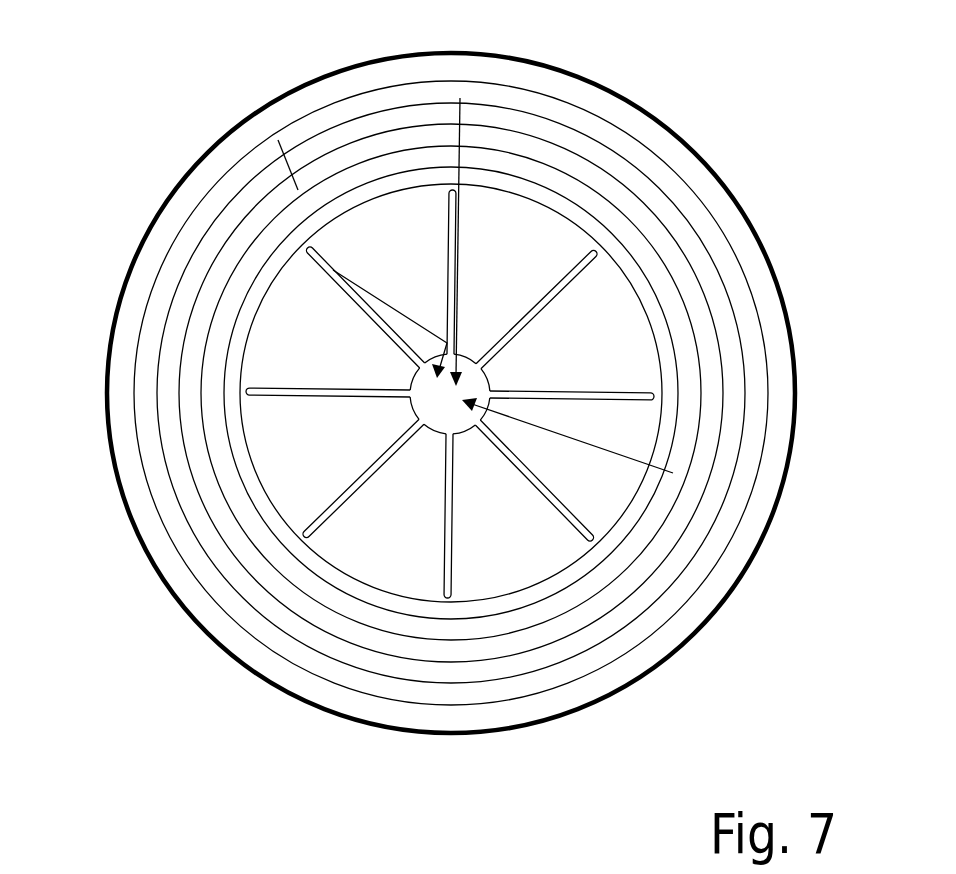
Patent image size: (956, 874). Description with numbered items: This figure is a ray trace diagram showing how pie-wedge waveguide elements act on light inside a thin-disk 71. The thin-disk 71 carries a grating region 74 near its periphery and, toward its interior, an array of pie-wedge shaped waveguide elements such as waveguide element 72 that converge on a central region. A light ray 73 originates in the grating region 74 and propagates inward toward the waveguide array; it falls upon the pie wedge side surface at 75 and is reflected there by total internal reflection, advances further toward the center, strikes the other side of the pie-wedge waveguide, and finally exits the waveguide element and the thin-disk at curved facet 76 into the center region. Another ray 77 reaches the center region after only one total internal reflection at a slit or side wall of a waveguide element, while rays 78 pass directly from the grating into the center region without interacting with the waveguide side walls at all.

The thin-disk 71 is at (293, 494).
The waveguide element 72 is at (418, 338).
The light ray 73 is at (333, 270).
The grating region 74 is at (287, 133).
The pie wedge side surface 75 is at (333, 268).
The curved facet 76 is at (412, 408).
The ray 77 is at (455, 273).
The rays 78 is at (515, 418).